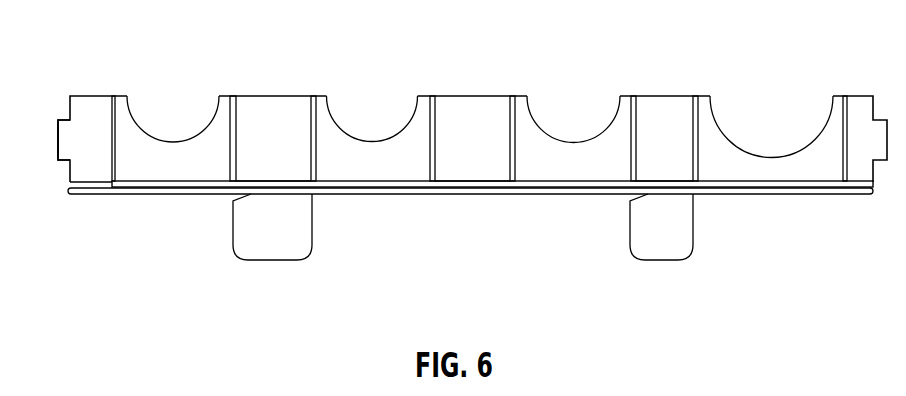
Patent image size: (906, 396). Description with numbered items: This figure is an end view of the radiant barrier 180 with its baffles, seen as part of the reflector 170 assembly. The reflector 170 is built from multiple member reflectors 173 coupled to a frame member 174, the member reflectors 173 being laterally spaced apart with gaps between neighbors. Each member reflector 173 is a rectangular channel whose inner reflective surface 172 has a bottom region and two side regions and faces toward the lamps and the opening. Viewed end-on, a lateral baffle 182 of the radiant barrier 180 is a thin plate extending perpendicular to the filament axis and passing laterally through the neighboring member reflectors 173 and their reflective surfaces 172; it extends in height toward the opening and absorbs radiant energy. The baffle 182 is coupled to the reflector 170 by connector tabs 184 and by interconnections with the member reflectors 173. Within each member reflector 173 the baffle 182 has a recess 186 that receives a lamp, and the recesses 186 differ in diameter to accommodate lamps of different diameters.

The reflector 170 is at (141, 44).
The reflective surface 172 is at (328, 170).
The member reflector 173 is at (115, 148).
The frame member 174 is at (78, 196).
The radiant barrier 180 is at (58, 103).
The lateral baffle 182 is at (59, 150).
The connector tab 184 is at (302, 220).
The recess 186 is at (197, 134).